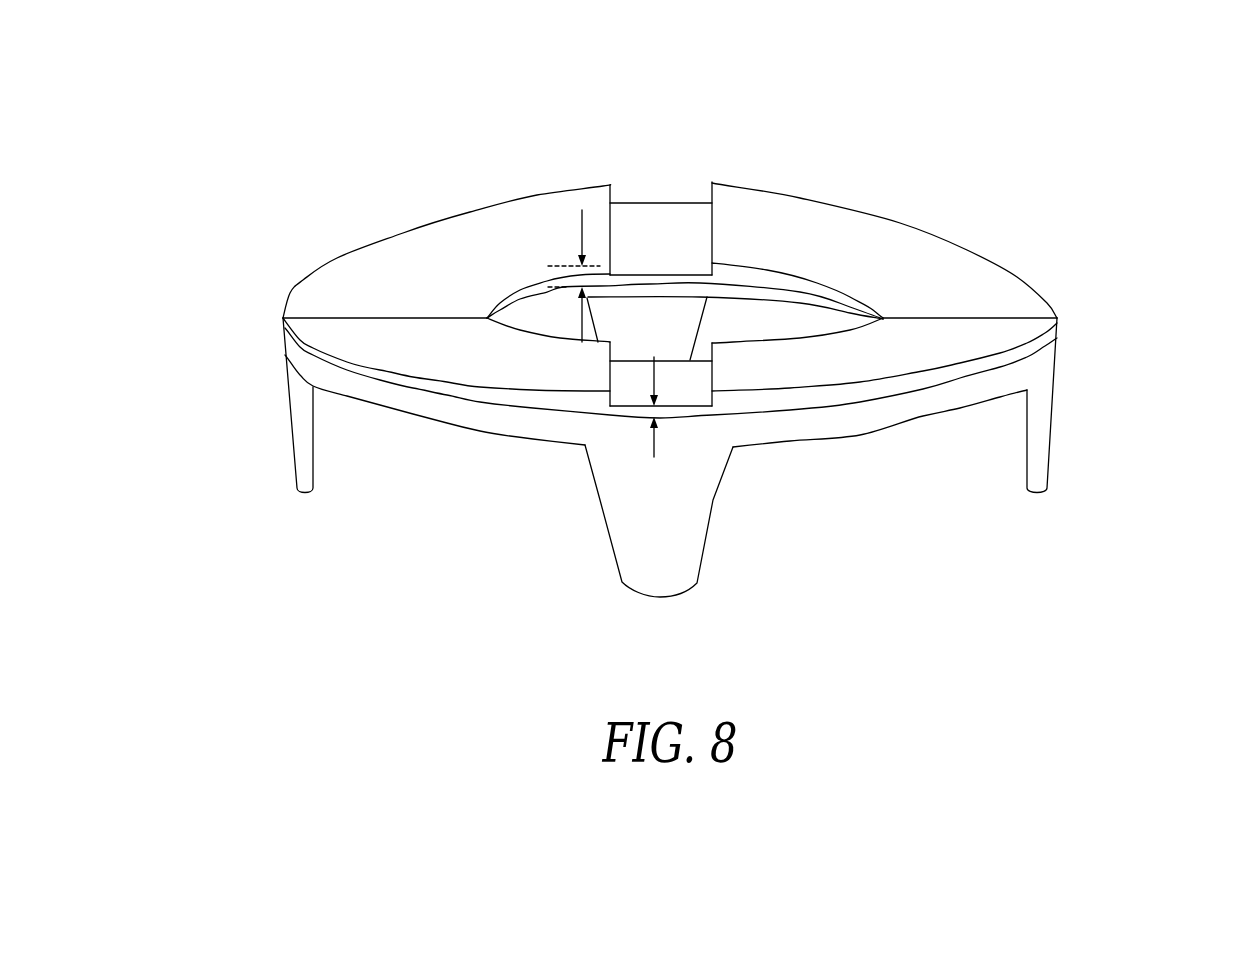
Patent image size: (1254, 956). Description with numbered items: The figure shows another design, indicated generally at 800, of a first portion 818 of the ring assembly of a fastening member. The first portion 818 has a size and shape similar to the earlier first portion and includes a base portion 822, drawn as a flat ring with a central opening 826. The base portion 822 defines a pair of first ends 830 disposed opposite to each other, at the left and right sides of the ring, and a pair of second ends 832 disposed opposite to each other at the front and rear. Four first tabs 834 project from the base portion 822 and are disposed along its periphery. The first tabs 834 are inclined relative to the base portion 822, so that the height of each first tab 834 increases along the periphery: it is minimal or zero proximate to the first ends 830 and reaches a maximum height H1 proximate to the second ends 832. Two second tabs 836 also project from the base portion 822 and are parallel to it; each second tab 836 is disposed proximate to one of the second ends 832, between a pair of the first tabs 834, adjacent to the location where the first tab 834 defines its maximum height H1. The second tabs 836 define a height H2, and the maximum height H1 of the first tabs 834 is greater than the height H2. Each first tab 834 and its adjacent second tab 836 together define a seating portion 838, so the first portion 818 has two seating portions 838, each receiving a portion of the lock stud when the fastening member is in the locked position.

The locking ring assembly 800 is at (1112, 82).
The first portion 818 is at (330, 216).
The base portion 822 is at (333, 364).
The central aperture 826 is at (741, 308).
The first ends 830 is at (214, 341).
The second ends 832 is at (692, 180).
The first tabs 834 is at (535, 220).
The second tabs 836 is at (635, 217).
The seating portion 838 is at (658, 208).
The maximum height H1 is at (580, 228).
The height H2 is at (654, 457).